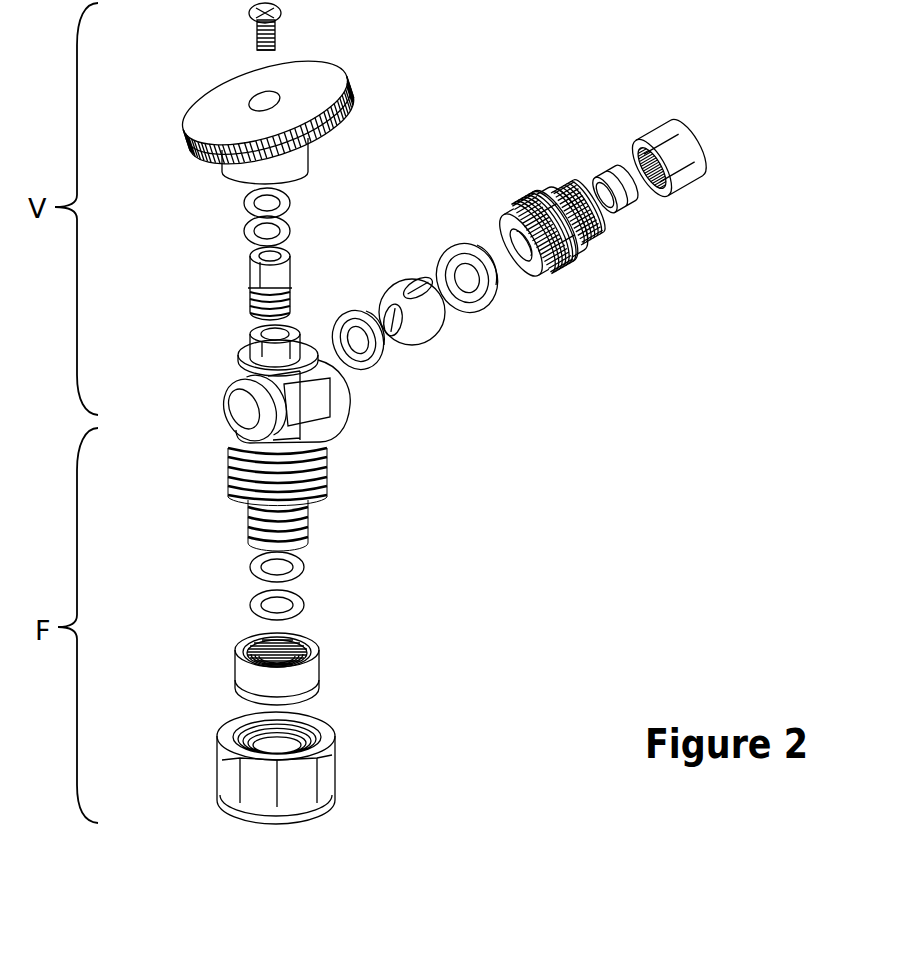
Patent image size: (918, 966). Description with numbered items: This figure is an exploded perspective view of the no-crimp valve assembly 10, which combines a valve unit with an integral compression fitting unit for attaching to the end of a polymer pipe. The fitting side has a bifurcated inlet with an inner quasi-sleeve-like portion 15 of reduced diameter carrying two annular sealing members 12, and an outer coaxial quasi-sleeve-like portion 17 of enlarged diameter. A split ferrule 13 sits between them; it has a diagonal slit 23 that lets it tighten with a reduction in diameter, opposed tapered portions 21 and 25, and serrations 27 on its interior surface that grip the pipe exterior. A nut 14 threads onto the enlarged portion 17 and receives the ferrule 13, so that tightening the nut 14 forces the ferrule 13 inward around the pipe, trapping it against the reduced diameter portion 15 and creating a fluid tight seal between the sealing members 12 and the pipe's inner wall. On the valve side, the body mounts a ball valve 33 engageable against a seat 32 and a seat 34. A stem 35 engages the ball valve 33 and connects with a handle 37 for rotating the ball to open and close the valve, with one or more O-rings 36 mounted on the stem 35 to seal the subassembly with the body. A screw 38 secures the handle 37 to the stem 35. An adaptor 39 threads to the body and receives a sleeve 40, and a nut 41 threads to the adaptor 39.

The valve assembly 10 is at (333, 418).
The annular sealing members 12 is at (312, 579).
The split ferrule 13 is at (316, 681).
The nut 14 is at (306, 776).
The inner quasi-sleeve-like portion 15 is at (300, 527).
The outer quasi-sleeve-like portion 17 is at (232, 478).
The tapered portion 21 is at (252, 698).
The diagonal slit 23 is at (300, 647).
The tapered portion 25 is at (238, 663).
The serrations 27 is at (263, 641).
The seat 32 is at (385, 358).
The ball valve 33 is at (447, 326).
The seat 34 is at (500, 294).
The stem 35 is at (245, 288).
The O-rings 36 is at (243, 234).
The handle 37 is at (248, 162).
The screw 38 is at (252, 35).
The adaptor 39 is at (580, 268).
The sleeve 40 is at (638, 213).
The nut 41 is at (706, 186).